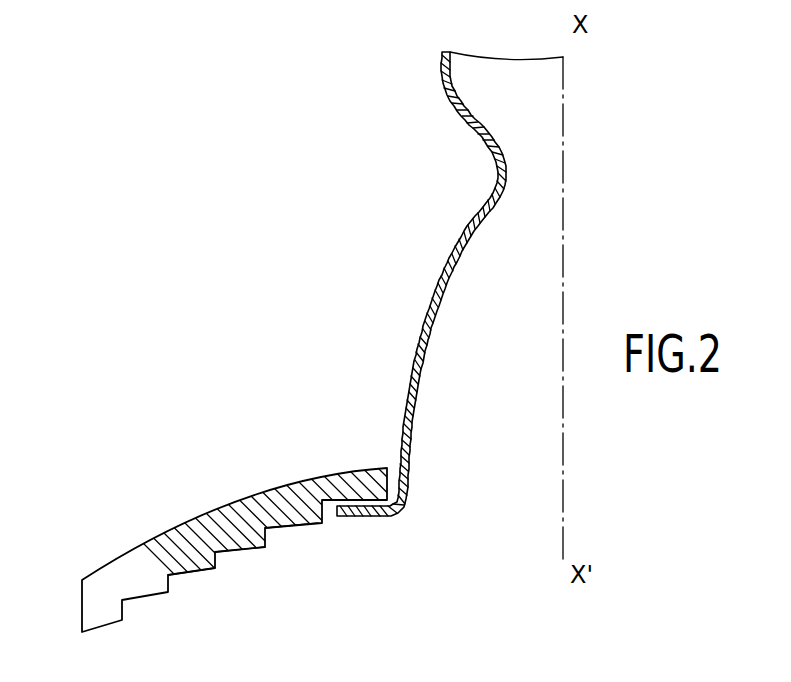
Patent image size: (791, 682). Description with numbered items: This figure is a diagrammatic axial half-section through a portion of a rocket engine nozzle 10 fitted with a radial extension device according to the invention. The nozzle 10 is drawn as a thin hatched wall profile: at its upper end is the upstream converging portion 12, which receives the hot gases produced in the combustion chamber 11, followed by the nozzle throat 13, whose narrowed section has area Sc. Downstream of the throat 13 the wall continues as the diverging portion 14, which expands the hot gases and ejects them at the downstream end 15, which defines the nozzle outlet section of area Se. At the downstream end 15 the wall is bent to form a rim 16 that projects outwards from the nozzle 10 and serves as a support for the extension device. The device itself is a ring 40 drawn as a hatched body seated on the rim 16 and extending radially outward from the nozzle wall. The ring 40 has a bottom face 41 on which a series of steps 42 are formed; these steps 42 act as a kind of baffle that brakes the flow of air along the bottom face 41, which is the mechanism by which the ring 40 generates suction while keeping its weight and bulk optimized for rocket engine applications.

The rocket engine nozzle 10 is at (448, 240).
The combustion chamber 11 is at (507, 88).
The upstream converging portion 12 is at (441, 98).
The nozzle throat 13 is at (495, 158).
The diverging portion 14 is at (418, 335).
The downstream end 15 is at (408, 507).
The rim 16 is at (360, 514).
The ring 40 is at (223, 490).
The bottom face 41 is at (242, 549).
The steps 42 is at (190, 573).